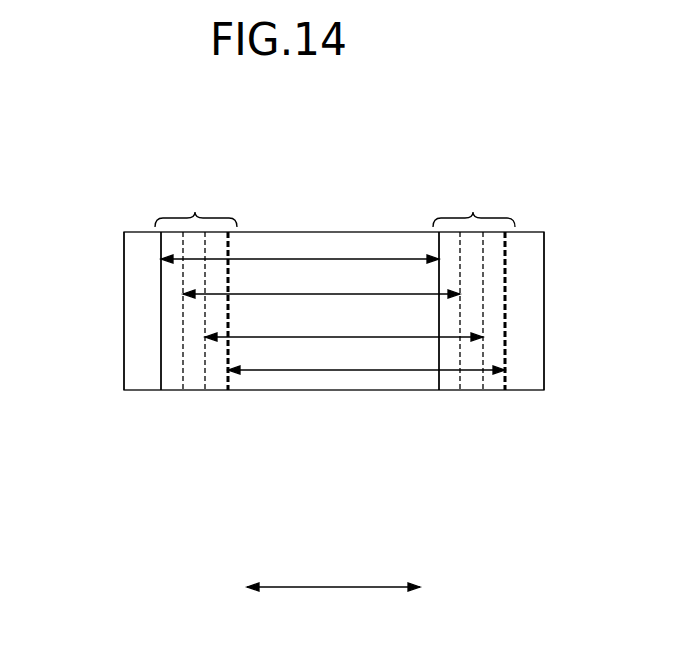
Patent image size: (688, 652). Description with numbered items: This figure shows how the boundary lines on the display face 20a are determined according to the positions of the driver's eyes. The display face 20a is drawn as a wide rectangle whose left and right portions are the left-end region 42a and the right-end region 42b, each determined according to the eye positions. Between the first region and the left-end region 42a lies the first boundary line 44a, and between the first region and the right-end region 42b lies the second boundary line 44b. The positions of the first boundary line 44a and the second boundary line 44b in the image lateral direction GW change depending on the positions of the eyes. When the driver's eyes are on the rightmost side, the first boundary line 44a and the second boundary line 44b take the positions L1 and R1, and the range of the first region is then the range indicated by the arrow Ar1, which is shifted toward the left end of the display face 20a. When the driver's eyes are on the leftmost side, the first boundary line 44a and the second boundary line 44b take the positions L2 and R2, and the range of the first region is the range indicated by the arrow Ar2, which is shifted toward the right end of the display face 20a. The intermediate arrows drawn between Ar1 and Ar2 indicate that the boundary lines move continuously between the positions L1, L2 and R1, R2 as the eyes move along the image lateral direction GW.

The display face 20a is at (343, 232).
The left-end region 42a is at (140, 322).
The right-end region 42b is at (520, 320).
The first boundary line 44a is at (195, 197).
The second boundary line 44b is at (473, 197).
The arrow Ar1 is at (264, 255).
The arrow Ar2 is at (345, 373).
The position L1 is at (161, 412).
The position L2 is at (227, 412).
The position R1 is at (441, 412).
The position R2 is at (506, 412).
The image lateral direction GW is at (333, 576).